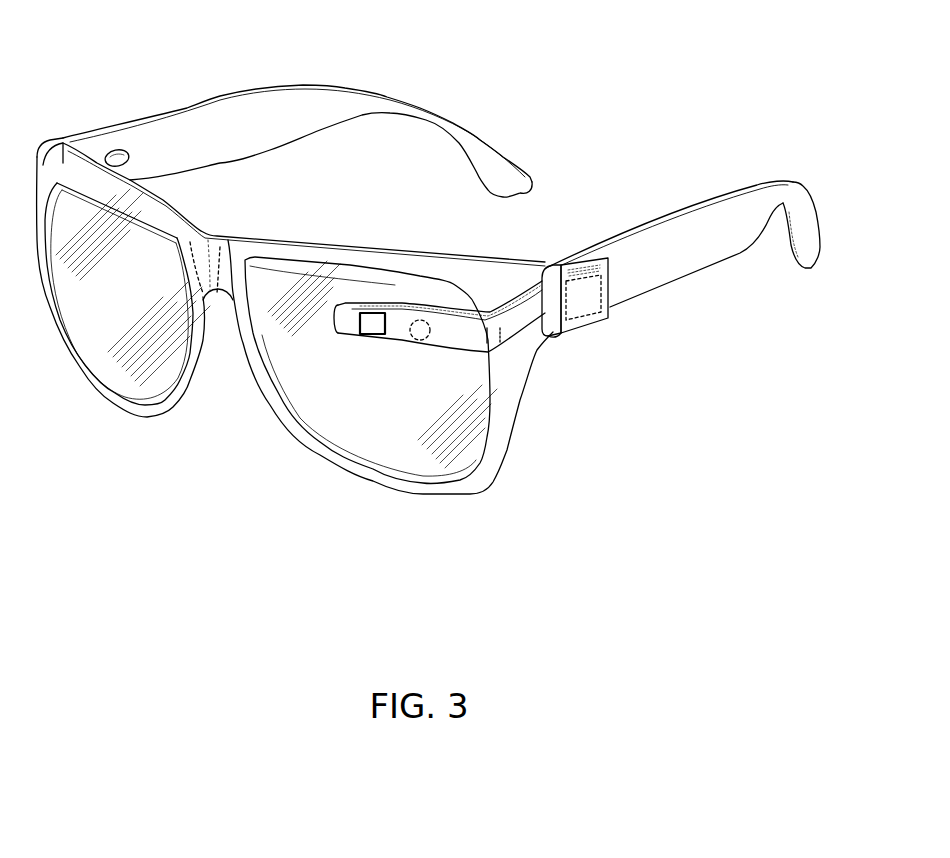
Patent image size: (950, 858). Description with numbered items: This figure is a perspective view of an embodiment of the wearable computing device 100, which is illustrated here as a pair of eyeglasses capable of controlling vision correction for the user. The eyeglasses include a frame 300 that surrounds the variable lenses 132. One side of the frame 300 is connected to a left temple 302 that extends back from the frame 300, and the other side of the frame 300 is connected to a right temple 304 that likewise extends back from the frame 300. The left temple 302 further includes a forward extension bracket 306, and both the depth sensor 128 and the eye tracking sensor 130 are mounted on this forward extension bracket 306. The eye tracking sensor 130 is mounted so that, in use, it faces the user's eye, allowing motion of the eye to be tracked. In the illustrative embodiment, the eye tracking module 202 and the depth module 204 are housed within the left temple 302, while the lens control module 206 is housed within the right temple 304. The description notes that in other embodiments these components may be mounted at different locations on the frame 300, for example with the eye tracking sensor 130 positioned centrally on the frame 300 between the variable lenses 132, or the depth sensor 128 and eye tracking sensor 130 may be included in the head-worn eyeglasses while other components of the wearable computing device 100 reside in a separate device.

The wearable computing device 100 is at (763, 100).
The depth sensor 128 is at (372, 334).
The eye tracking sensor 130 is at (419, 340).
The variable lenses 132 is at (327, 393).
The eye tracking module 202 is at (605, 323).
The depth module 204 is at (568, 323).
The lens control module 206 is at (105, 148).
The frame 300 is at (220, 262).
The left temple 302 is at (677, 247).
The right temple 304 is at (207, 125).
The forward extension bracket 306 is at (470, 330).